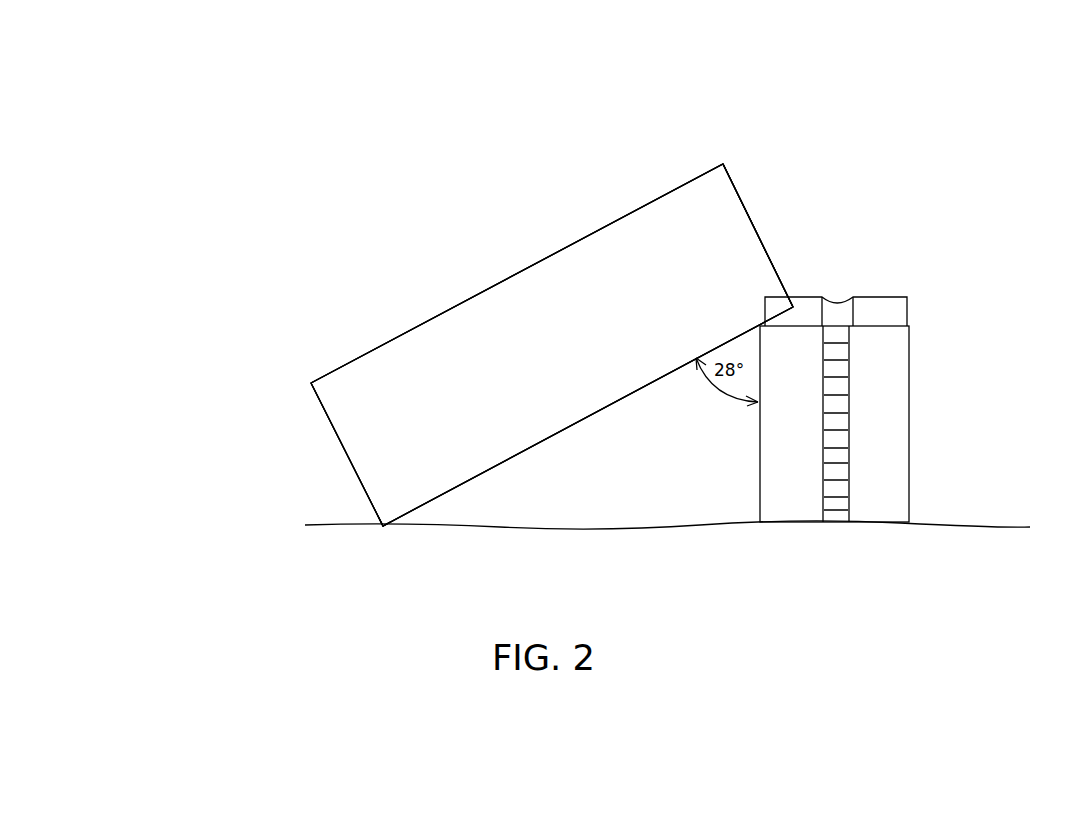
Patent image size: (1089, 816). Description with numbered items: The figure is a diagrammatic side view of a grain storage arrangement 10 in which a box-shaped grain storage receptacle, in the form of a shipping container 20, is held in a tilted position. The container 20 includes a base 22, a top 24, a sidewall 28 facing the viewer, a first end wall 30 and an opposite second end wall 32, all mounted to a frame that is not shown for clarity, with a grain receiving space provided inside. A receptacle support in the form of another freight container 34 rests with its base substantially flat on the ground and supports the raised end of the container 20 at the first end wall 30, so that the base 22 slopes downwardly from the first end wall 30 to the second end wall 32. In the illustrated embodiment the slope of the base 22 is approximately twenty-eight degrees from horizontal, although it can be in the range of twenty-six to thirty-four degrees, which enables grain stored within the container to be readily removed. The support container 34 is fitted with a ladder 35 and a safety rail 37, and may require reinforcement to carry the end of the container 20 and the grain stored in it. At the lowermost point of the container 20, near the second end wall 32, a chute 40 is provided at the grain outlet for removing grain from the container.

The grain storage arrangement 10 is at (312, 255).
The container 20 is at (346, 409).
The base 22 is at (530, 452).
The top 24 is at (562, 250).
The sidewall 28 is at (724, 207).
The first end wall 30 is at (765, 247).
The second end wall 32 is at (378, 524).
The freight container 34 is at (900, 421).
The ladder 35 is at (850, 468).
The safety rail 37 is at (907, 302).
The chute 40 is at (384, 526).